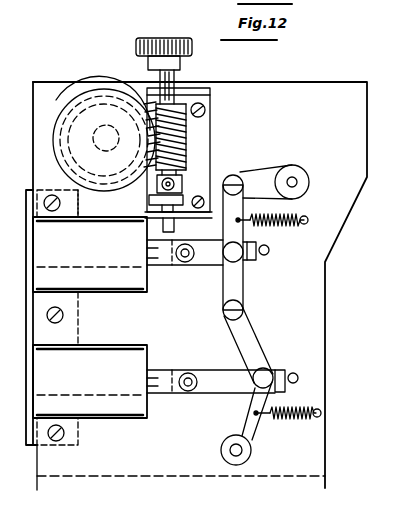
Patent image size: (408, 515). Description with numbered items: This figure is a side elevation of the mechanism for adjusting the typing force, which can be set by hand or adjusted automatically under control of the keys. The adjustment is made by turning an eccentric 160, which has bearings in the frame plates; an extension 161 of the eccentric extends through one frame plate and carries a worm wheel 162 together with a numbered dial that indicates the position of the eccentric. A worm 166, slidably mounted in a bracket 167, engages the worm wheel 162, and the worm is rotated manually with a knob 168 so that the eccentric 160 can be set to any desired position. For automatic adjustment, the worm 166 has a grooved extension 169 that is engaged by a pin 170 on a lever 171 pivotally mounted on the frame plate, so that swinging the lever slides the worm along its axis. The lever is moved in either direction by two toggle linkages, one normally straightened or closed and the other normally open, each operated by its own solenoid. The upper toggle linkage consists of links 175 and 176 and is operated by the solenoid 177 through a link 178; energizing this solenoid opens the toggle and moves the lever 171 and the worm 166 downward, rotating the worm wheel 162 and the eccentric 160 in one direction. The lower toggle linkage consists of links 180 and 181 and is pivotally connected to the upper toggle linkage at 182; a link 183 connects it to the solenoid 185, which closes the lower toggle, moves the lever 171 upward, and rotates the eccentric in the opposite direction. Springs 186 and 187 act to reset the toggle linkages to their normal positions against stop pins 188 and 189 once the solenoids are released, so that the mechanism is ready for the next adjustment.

The eccentric 160 is at (97, 86).
The extension of the eccentric 161 is at (66, 103).
The worm wheel 162 is at (74, 171).
The worm 166 is at (188, 137).
The bracket 167 is at (211, 95).
The knob 168 is at (170, 37).
The grooved extension 169 is at (148, 199).
The pin 170 is at (183, 172).
The lever 171 is at (265, 170).
The link 175 is at (228, 280).
The link 176 is at (232, 229).
The solenoid 177 is at (126, 284).
The link 178 is at (252, 262).
The link 180 is at (240, 346).
The link 181 is at (252, 440).
The pivotal connection 182 is at (244, 310).
The link 183 is at (208, 390).
The solenoid 185 is at (118, 348).
The spring 186 is at (303, 225).
The spring 187 is at (319, 410).
The stop pin 188 is at (269, 254).
The stop pin 189 is at (293, 372).